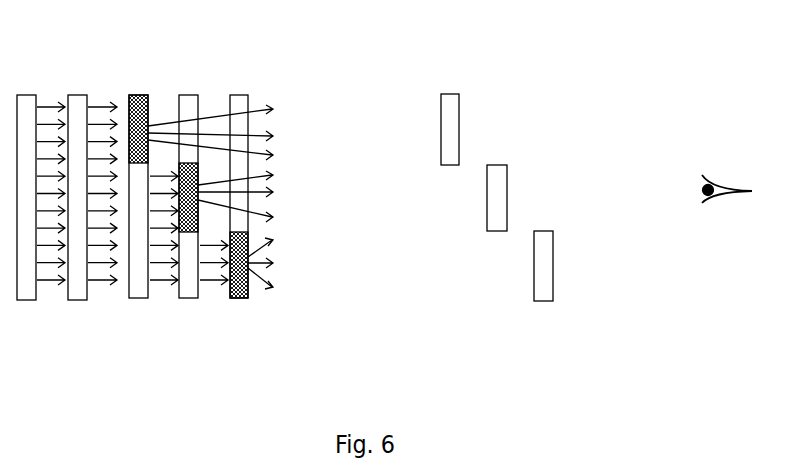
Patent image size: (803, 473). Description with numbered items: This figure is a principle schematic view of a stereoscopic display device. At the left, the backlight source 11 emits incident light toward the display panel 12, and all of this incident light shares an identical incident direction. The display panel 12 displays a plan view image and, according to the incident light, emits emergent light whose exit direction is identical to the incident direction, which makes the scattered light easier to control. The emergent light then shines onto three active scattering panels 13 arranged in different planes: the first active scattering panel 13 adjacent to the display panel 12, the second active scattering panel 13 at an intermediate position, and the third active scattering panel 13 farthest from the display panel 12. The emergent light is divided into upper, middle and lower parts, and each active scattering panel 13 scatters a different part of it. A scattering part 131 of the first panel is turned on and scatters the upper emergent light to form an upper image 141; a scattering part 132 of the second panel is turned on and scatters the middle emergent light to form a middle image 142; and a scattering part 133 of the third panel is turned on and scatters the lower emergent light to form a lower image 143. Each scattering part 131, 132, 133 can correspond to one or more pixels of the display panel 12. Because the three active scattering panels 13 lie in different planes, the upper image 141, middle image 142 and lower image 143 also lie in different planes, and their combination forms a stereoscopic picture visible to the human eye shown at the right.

The backlight source 11 is at (23, 109).
The display panel 12 is at (74, 109).
The active scattering panel 13 is at (188, 109).
The scattering part 131 is at (137, 109).
The scattering part 132 is at (185, 222).
The scattering part 133 is at (235, 282).
The upper image 141 is at (448, 140).
The middle image 142 is at (498, 212).
The lower image 143 is at (542, 285).